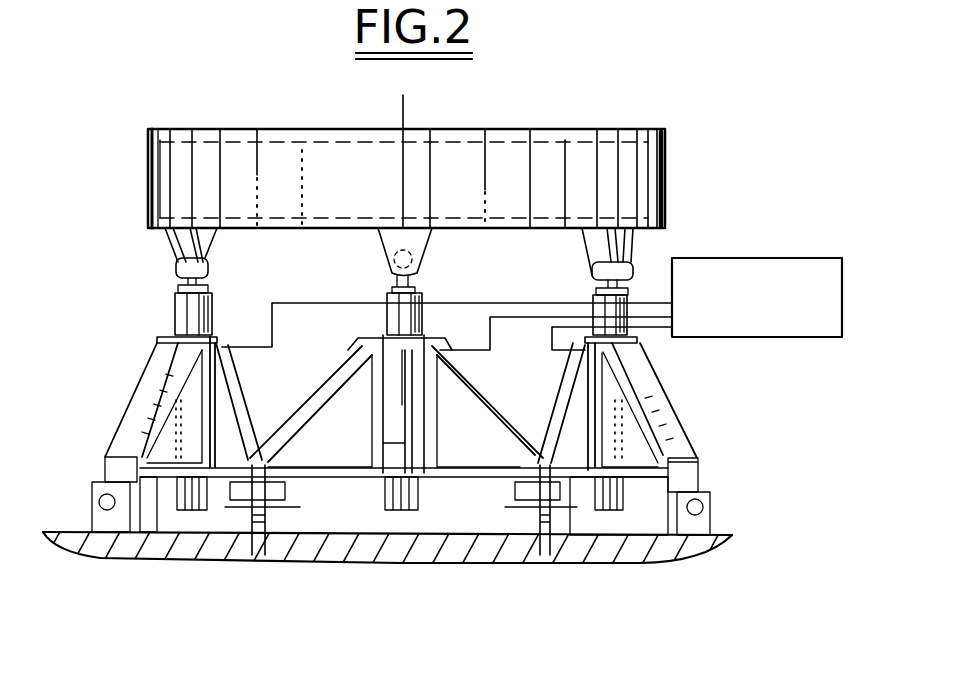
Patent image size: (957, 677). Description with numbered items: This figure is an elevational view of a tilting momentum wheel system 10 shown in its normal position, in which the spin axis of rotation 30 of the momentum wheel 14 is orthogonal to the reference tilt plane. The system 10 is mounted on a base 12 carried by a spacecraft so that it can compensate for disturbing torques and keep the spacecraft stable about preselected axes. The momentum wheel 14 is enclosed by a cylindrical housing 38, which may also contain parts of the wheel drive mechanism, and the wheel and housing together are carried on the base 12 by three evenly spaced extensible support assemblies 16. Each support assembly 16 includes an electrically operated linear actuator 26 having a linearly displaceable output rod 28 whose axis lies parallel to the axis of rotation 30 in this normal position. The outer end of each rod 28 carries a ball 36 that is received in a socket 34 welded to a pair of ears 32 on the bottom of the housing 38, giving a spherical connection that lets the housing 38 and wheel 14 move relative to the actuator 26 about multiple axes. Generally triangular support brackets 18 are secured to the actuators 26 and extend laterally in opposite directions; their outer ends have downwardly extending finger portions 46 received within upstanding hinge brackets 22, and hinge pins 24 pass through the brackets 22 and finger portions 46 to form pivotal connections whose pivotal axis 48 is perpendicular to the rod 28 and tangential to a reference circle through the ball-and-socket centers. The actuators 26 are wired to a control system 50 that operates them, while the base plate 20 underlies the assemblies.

The tilting momentum wheel system 10 is at (662, 78).
The base 12 is at (90, 560).
The momentum wheel 14 is at (494, 158).
The extensible support assemblies 16 is at (126, 331).
The support brackets 18 is at (147, 376).
The base plate 20 is at (150, 450).
The hinge brackets 22 is at (90, 503).
The hinge pins 24 is at (100, 485).
The linear actuator 26 is at (383, 310).
The output rod 28 is at (420, 305).
The axis of rotation 30 is at (402, 105).
The ears 32 is at (165, 241).
The socket 34 is at (176, 260).
The ball 36 is at (212, 278).
The cylindrical housing 38 is at (667, 150).
The finger portions 46 is at (260, 545).
The pivotal axis 48 is at (285, 505).
The control system 50 is at (793, 258).